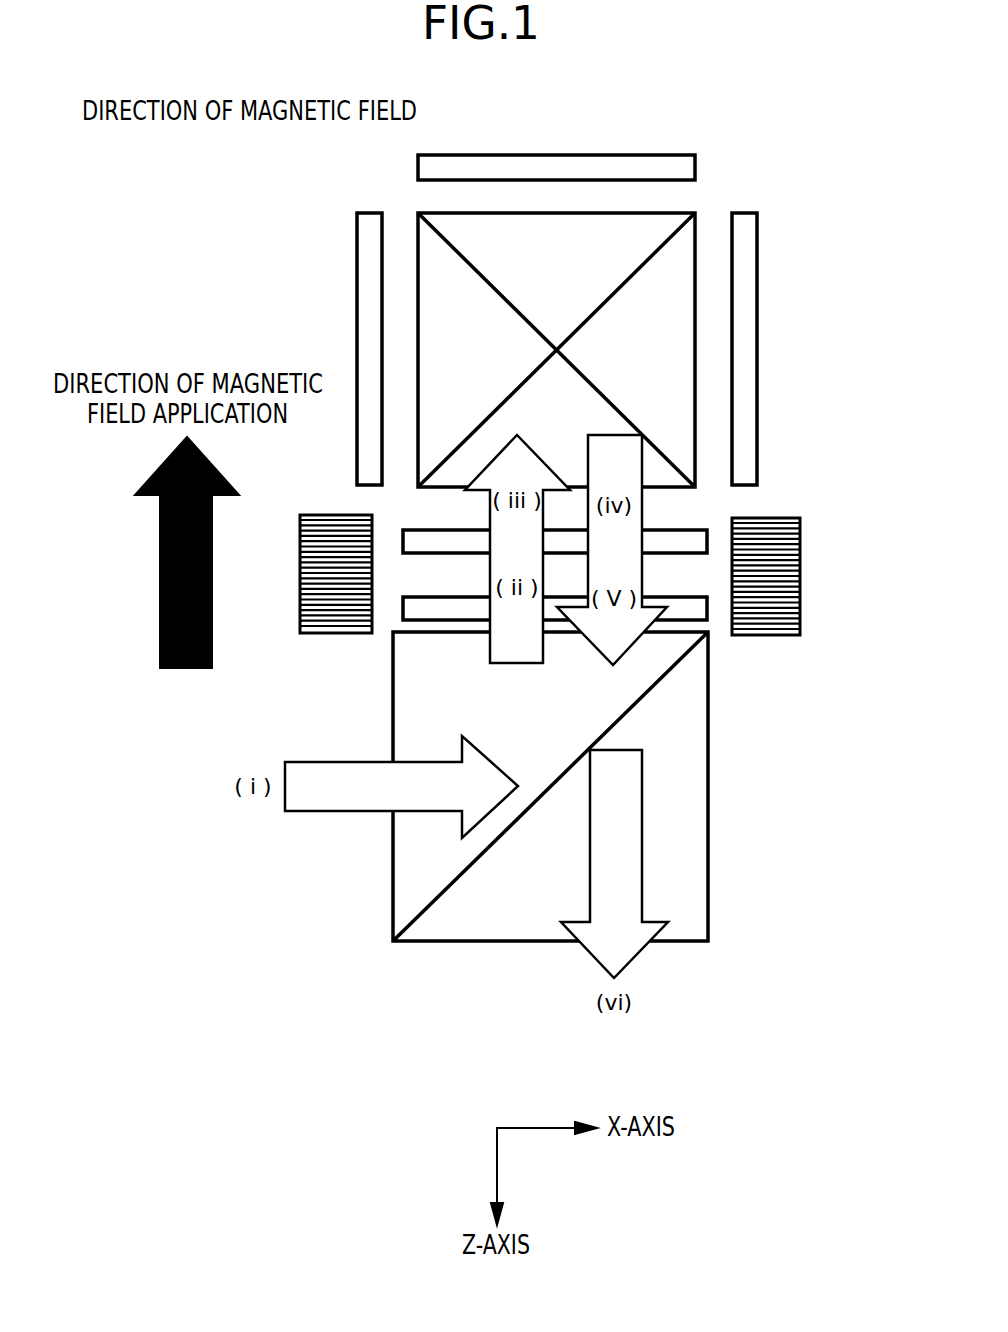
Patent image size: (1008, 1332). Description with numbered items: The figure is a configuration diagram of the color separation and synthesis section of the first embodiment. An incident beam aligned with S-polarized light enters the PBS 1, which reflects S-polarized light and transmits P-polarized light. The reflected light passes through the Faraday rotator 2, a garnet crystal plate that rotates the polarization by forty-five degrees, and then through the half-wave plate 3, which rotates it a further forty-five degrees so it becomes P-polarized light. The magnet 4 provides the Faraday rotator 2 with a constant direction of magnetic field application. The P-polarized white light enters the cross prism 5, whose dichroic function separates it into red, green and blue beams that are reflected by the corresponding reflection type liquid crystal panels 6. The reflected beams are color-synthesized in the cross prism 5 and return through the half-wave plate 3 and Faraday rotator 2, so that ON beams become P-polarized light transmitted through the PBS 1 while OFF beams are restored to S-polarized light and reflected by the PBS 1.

The PBS 1 is at (710, 785).
The Faraday rotator 2 is at (709, 608).
The half-wave plate 3 is at (688, 527).
The magnet 4 is at (334, 637).
The cross prism 5 is at (670, 355).
The reflection type liquid crystal panel 6 is at (358, 257).